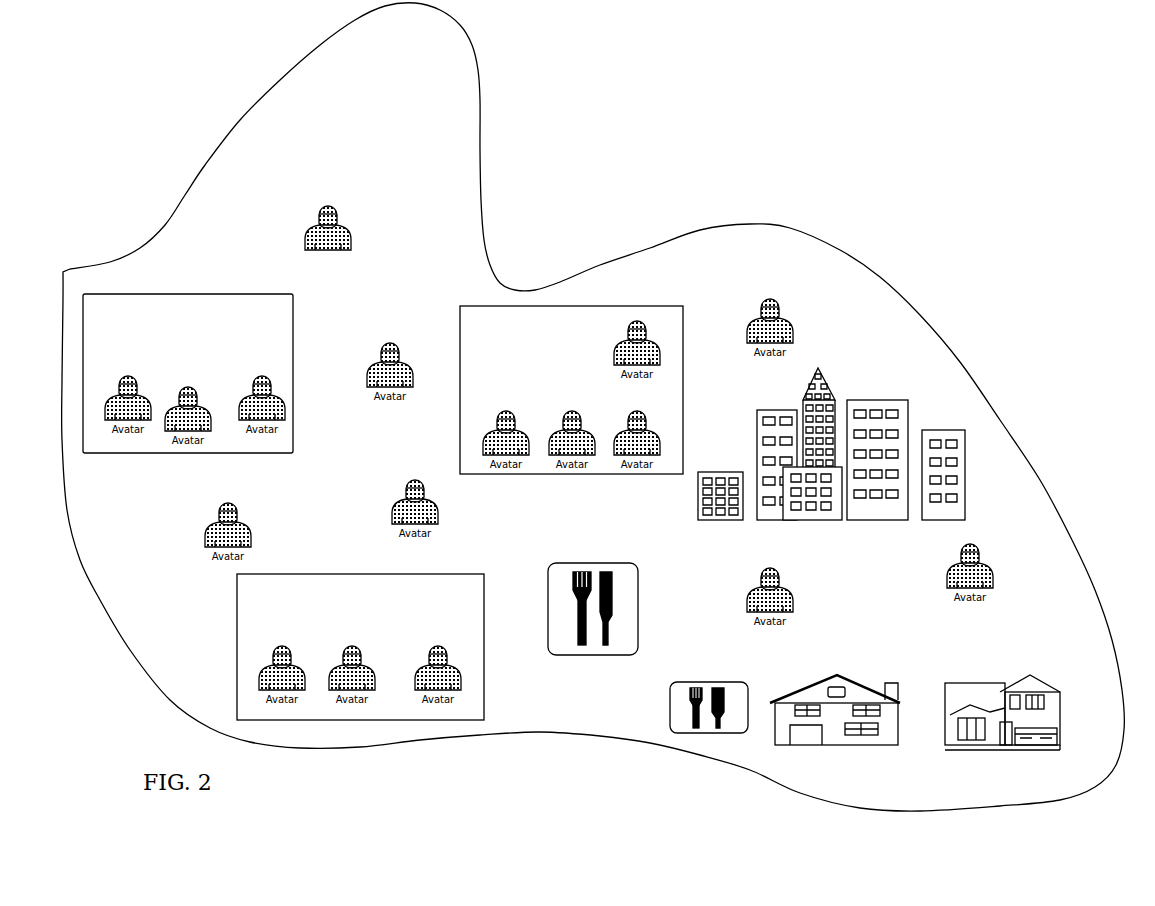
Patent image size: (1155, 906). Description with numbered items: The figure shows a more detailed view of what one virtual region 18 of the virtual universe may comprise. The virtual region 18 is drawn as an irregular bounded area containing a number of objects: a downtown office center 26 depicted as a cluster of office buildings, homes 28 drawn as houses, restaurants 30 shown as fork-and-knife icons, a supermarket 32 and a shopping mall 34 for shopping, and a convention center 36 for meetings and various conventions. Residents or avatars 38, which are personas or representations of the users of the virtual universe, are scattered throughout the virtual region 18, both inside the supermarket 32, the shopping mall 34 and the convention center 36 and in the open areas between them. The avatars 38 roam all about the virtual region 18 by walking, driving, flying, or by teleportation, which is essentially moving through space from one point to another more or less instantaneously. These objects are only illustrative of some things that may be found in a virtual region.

The virtual region 18 is at (480, 66).
The downtown office center 26 is at (903, 392).
The homes 28 is at (847, 745).
The restaurants 30 is at (638, 612).
The supermarket 32 is at (190, 293).
The shopping mall 34 is at (237, 647).
The convention center 36 is at (558, 475).
The avatars 38 is at (351, 234).